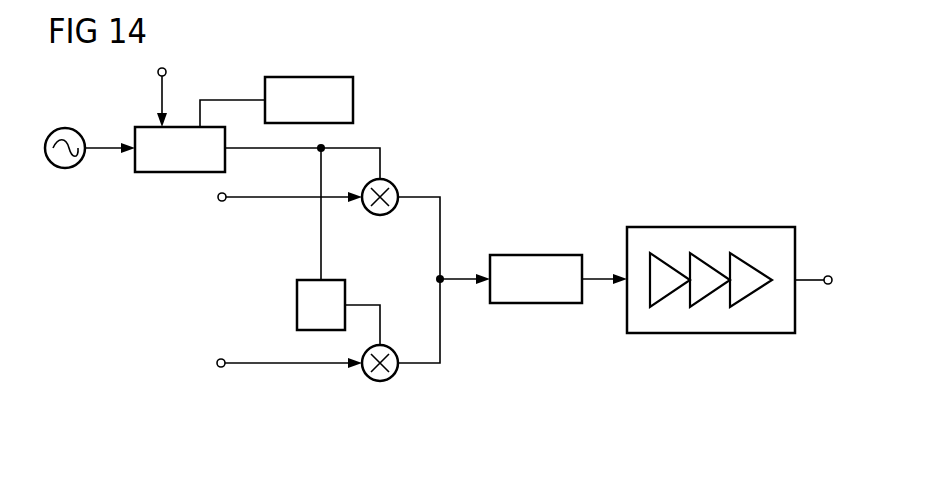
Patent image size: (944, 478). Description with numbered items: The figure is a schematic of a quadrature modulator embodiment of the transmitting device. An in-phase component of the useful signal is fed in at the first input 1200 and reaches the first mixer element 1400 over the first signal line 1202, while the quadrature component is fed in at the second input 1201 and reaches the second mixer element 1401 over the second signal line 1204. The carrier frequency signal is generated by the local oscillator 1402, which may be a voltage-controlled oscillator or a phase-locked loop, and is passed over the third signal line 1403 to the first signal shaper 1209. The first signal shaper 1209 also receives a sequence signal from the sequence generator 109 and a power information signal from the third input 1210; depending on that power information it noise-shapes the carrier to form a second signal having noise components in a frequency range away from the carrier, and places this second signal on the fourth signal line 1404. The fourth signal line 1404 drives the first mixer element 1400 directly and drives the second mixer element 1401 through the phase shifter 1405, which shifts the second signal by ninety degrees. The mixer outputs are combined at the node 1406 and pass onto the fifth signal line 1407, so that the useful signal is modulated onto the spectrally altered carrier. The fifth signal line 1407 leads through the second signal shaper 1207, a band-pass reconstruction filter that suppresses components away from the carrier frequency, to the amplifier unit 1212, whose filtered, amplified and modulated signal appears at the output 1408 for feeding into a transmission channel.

The sequence generator 109 is at (353, 100).
The first input 1200 is at (222, 201).
The second input 1201 is at (221, 367).
The first signal line 1202 is at (275, 198).
The second signal line 1204 is at (290, 365).
The second signal shaper 1207 is at (535, 255).
The first signal shaper 1209 is at (182, 172).
The third input 1210 is at (166, 71).
The amplifier unit 1212 is at (717, 333).
The first mixer element 1400 is at (380, 215).
The second mixer element 1401 is at (380, 381).
The local oscillator 1402 is at (68, 127).
The third signal line 1403 is at (100, 150).
The fourth signal line 1404 is at (380, 165).
The phase shifter 1405 is at (297, 303).
The node 1406 is at (443, 282).
The fifth signal line 1407 is at (455, 277).
The output 1408 is at (828, 276).